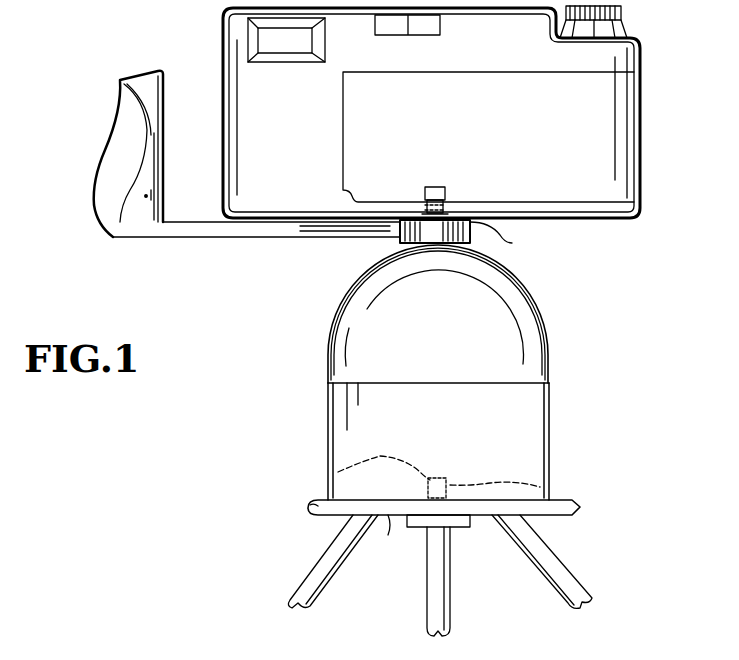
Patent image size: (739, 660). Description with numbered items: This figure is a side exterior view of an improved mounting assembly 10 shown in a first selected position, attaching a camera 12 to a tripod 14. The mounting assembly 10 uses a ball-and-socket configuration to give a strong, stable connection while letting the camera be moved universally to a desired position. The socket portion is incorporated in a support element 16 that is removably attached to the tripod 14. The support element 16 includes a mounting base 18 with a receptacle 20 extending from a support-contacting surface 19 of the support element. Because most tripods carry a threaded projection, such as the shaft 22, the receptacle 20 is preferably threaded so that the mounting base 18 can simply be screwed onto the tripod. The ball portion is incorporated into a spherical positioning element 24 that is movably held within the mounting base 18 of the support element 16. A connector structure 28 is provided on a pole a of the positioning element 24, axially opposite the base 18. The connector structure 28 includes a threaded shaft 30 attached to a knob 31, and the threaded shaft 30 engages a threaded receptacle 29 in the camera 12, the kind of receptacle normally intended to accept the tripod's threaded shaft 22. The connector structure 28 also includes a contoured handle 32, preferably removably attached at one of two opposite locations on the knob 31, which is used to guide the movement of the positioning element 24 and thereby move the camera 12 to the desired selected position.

The mounting assembly 10 is at (300, 360).
The camera 12 is at (643, 131).
The tripod 14 is at (578, 552).
The support element 16 is at (522, 453).
The mounting base 18 is at (346, 474).
The support-contacting surface 19 is at (393, 516).
The receptacle 20 is at (336, 471).
The shaft 22 is at (540, 487).
The positioning element 24 is at (552, 311).
The connector structure 28 is at (376, 250).
The threaded receptacle 29 is at (447, 192).
The threaded shaft 30 is at (455, 208).
The knob 31 is at (470, 243).
The handle 32 is at (118, 115).
The pole a is at (435, 246).